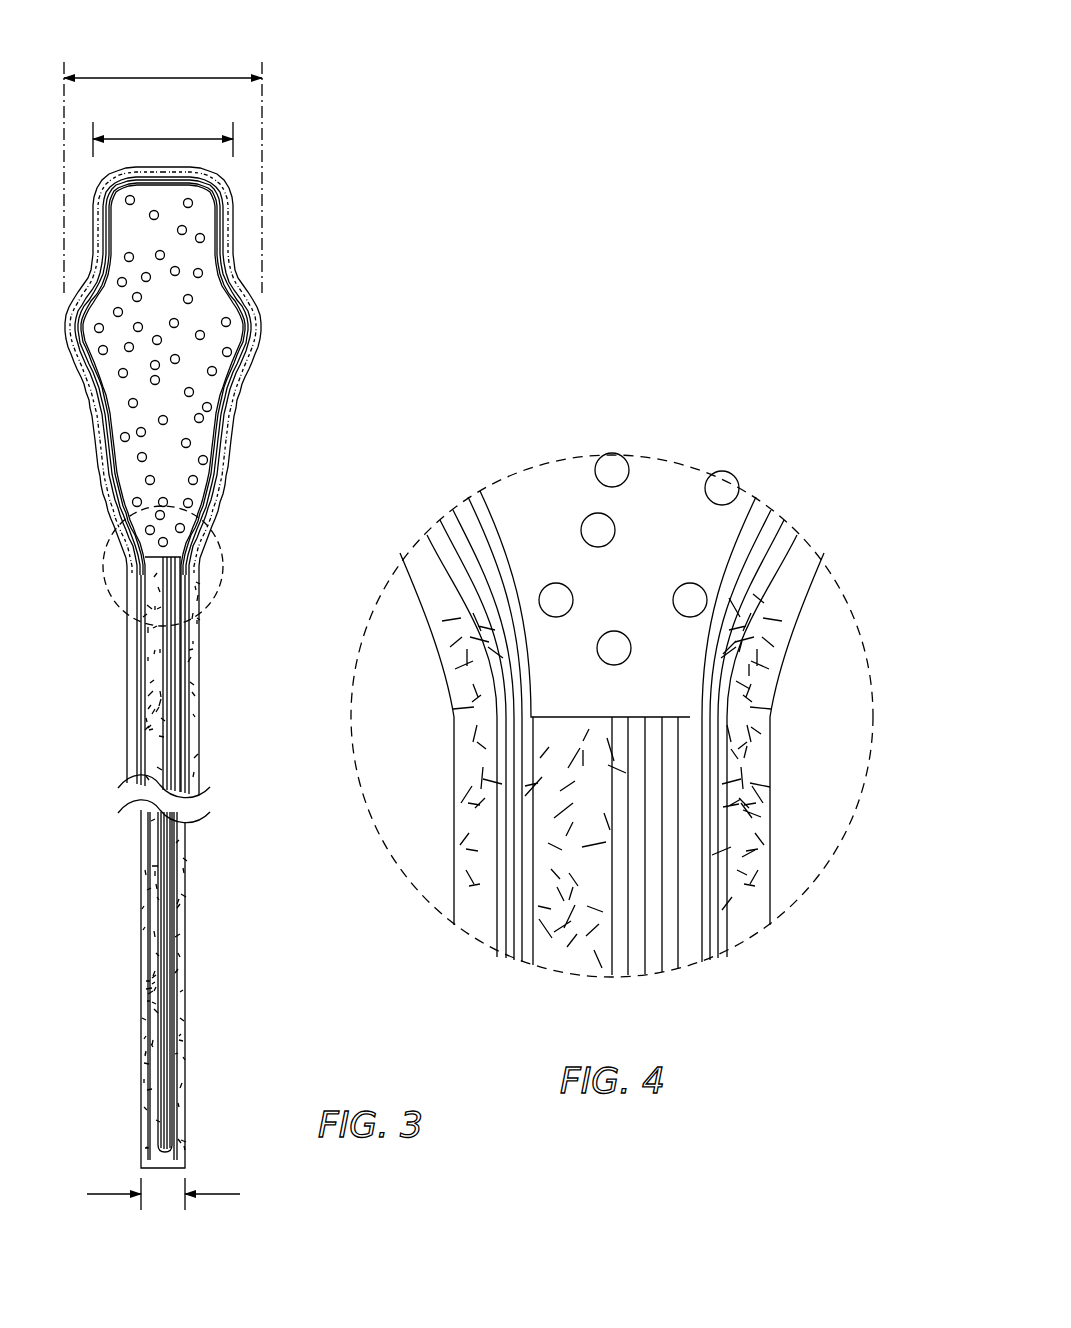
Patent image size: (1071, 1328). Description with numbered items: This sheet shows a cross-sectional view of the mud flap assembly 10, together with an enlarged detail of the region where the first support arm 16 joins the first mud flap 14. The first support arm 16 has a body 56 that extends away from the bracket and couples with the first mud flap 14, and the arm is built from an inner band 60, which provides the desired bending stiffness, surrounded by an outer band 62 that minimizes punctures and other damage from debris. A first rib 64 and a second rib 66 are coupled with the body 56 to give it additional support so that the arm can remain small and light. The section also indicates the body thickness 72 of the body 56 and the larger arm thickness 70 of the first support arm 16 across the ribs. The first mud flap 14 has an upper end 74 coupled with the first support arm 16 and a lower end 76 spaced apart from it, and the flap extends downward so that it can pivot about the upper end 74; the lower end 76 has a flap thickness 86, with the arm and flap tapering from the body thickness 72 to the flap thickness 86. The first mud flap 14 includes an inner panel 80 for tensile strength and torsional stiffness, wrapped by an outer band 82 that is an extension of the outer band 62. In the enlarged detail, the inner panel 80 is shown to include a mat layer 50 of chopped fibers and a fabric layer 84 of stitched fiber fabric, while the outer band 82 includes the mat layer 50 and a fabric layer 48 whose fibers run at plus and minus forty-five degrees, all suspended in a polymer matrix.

In FIG. 3, the mud flap assembly 10 is at (338, 186).
In FIG. 3, the first mud flap 14 is at (190, 960).
In FIG. 3, the first support arm 16 is at (238, 411).
In FIG. 4, the fabric layer 48 is at (513, 882).
In FIG. 4, the mat layer 50 is at (793, 626).
In FIG. 3, the body 56 is at (177, 450).
In FIG. 3, the inner band 60 is at (150, 413).
In FIG. 4, the inner band 60 is at (565, 520).
In FIG. 3, the outer band 62 is at (95, 500).
In FIG. 4, the outer band 62 is at (471, 553).
In FIG. 3, the first rib 64 is at (262, 337).
In FIG. 3, the second rib 66 is at (63, 335).
In FIG. 3, the arm thickness 70 is at (193, 78).
In FIG. 3, the body thickness 72 is at (163, 139).
In FIG. 3, the upper end 74 is at (200, 616).
In FIG. 3, the lower end 76 is at (185, 1098).
In FIG. 3, the inner panel 80 is at (175, 725).
In FIG. 4, the inner panel 80 is at (612, 912).
In FIG. 3, the outer band 82 is at (138, 923).
In FIG. 4, the outer band 82 is at (455, 865).
In FIG. 4, the fabric layer 84 is at (647, 905).
In FIG. 3, the flap thickness 86 is at (223, 1194).